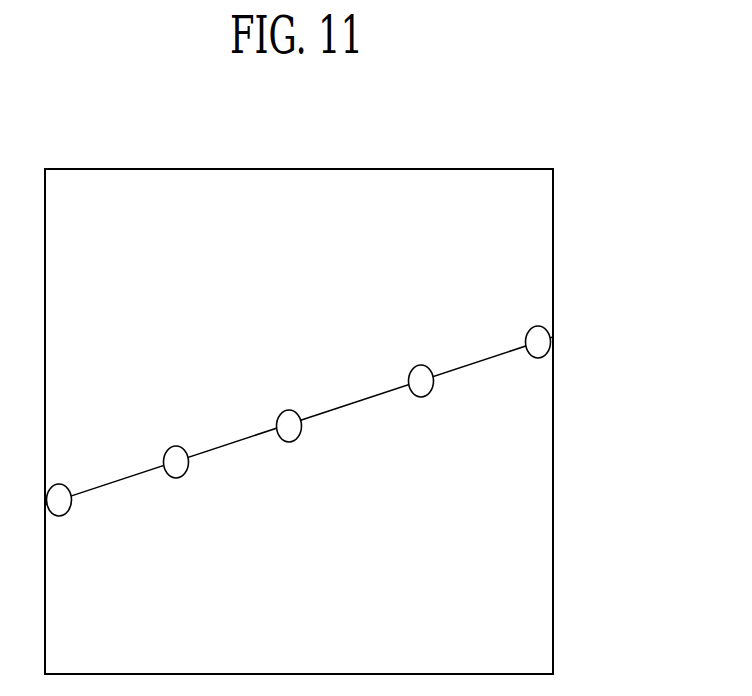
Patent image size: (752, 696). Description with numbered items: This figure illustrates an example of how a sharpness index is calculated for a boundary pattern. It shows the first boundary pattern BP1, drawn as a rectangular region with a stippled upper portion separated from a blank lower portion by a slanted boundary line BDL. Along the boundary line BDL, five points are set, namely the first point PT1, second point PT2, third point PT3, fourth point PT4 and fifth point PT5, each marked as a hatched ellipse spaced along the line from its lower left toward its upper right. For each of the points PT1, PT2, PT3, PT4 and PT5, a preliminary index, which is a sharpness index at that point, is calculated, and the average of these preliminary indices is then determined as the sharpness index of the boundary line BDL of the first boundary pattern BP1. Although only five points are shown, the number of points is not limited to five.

The first boundary pattern BP1 is at (527, 138).
The boundary line BDL is at (489, 376).
The first point PT1 is at (60, 517).
The second point PT2 is at (178, 479).
The third point PT3 is at (290, 443).
The fourth point PT4 is at (422, 398).
The fifth point PT5 is at (546, 352).